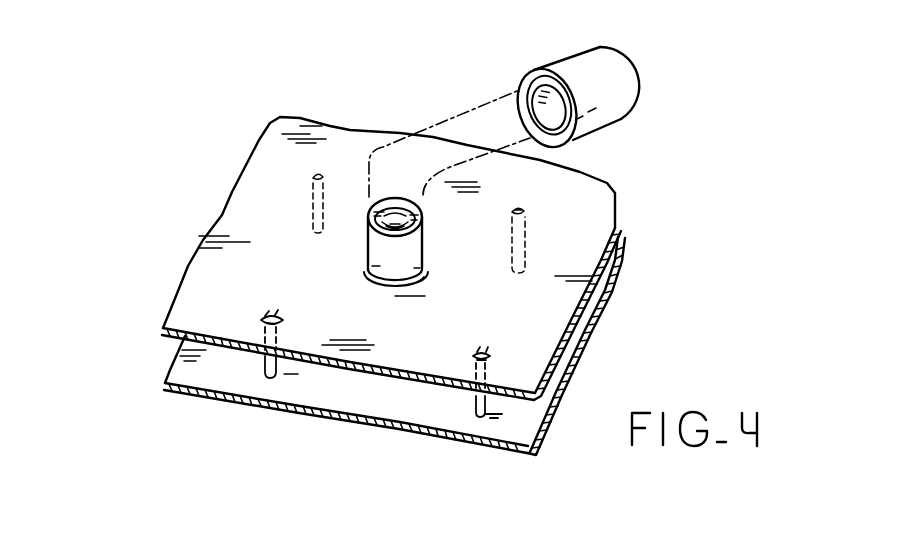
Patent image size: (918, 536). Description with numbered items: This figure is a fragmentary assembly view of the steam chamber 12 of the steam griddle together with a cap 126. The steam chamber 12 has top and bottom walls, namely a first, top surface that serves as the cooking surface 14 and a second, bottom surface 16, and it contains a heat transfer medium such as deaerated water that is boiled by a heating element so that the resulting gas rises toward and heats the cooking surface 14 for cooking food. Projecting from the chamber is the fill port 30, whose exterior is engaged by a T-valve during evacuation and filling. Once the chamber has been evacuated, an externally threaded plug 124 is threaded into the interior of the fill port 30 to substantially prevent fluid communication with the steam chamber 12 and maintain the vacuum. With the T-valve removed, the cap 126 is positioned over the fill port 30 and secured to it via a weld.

The steam chamber 12 is at (127, 307).
The cooking surface 14 is at (285, 205).
The bottom surface 16 is at (287, 412).
The fill port 30 is at (405, 253).
The plug 124 is at (402, 213).
The cap 126 is at (593, 78).